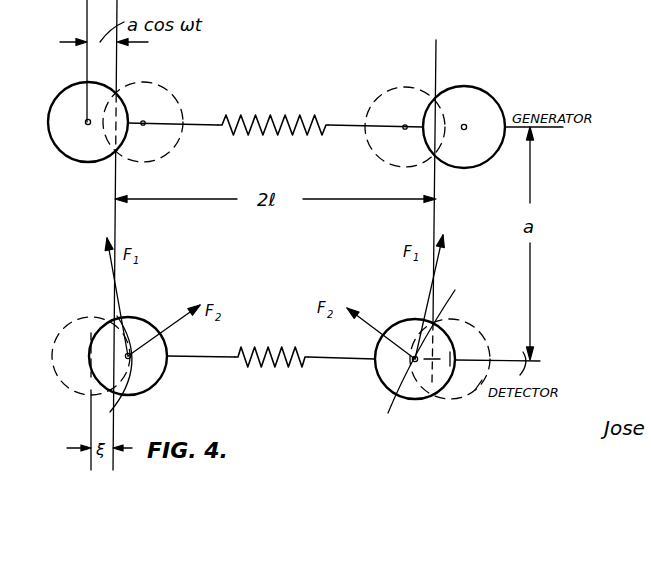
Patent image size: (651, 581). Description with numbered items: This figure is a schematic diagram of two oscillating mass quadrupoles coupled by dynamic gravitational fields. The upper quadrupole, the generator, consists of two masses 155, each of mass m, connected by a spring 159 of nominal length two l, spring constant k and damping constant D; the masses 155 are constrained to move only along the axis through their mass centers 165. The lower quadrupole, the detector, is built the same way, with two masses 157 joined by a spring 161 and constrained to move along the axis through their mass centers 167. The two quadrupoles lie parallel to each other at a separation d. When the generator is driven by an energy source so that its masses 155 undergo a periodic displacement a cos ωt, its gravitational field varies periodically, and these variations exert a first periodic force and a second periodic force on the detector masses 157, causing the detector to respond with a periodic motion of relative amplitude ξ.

The masses 155 is at (56, 100).
The mass center 165 is at (85, 125).
The spring 159 is at (266, 119).
The spring 161 is at (268, 349).
The masses 157 is at (137, 325).
The mass center 167 is at (280, 359).